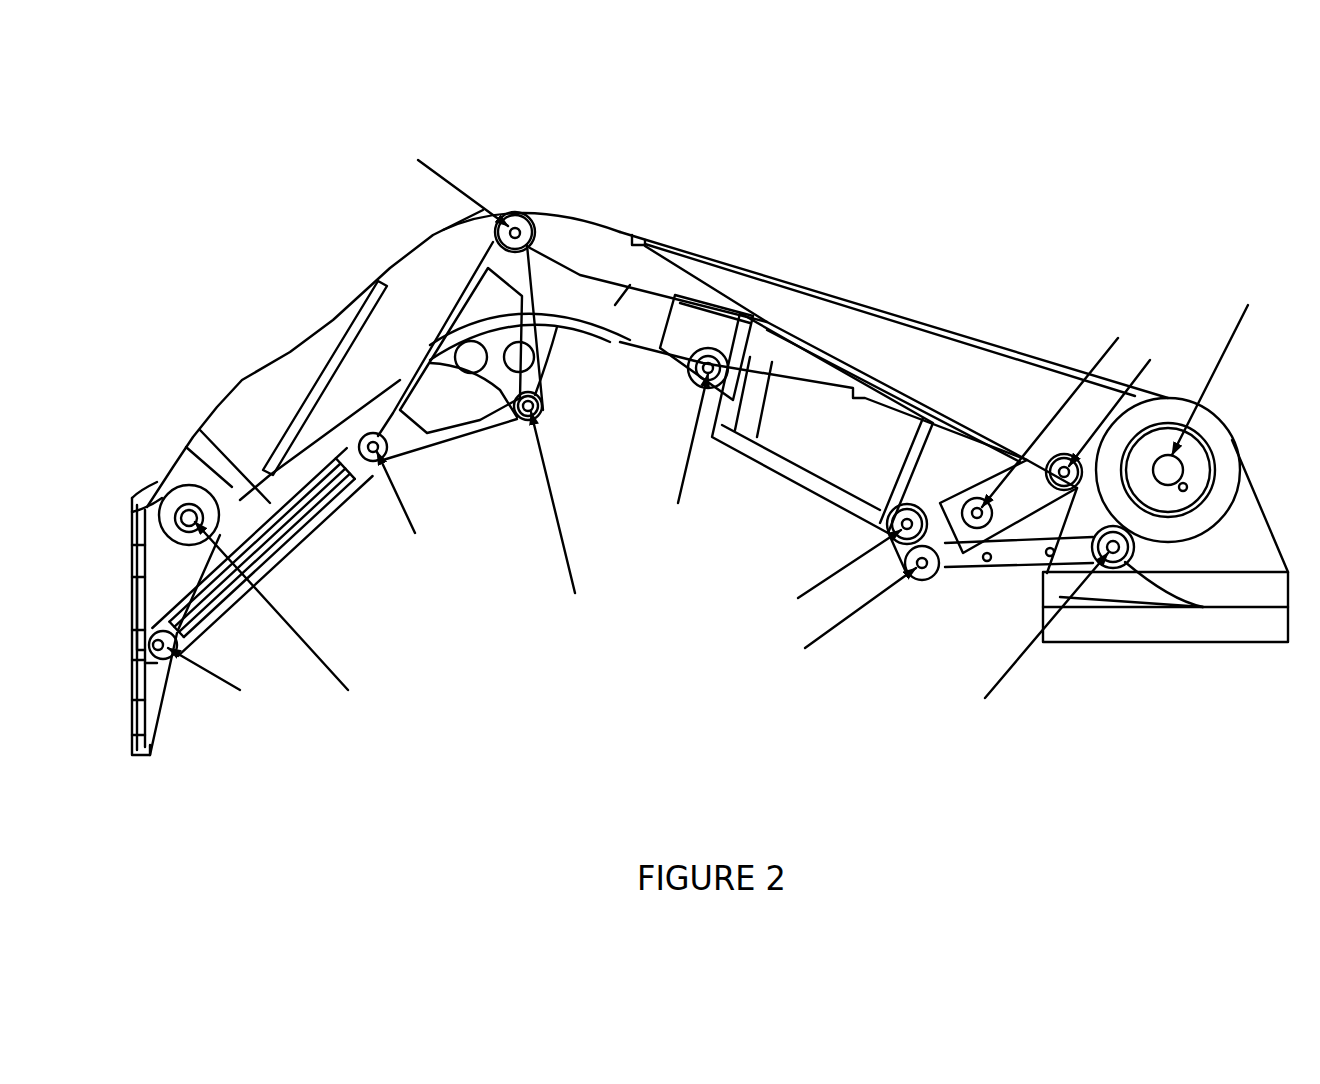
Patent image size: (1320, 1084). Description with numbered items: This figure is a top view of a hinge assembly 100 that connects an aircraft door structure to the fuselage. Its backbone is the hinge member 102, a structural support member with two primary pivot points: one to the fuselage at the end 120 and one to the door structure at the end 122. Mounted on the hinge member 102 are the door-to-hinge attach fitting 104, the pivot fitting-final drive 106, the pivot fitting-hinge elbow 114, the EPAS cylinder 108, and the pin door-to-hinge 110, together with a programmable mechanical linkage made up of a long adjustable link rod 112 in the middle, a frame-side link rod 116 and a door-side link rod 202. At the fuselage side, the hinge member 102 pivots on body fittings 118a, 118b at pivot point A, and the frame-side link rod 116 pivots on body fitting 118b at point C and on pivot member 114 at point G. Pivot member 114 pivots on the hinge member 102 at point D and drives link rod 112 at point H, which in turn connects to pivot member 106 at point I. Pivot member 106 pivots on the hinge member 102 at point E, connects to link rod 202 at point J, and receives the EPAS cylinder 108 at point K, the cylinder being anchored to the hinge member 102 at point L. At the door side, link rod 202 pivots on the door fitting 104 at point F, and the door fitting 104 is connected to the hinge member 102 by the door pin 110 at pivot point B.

The hinge assembly 100 is at (664, 203).
The hinge member 102 is at (815, 289).
The door-to-hinge attach fitting 104 is at (1133, 648).
The pivot fitting-final drive 106 is at (992, 468).
The EPAS cylinder 108 is at (738, 457).
The pin door-to-hinge 110 is at (1188, 482).
The adjustable link rod 112 is at (653, 365).
The pivot fitting-hinge elbow 114 is at (460, 437).
The frame-side link rod 116 is at (283, 555).
The body fitting 118a is at (143, 486).
The body fitting 118b is at (170, 713).
The end 120 is at (135, 348).
The end 122 is at (1290, 297).
The door-side link rod 202 is at (1000, 572).